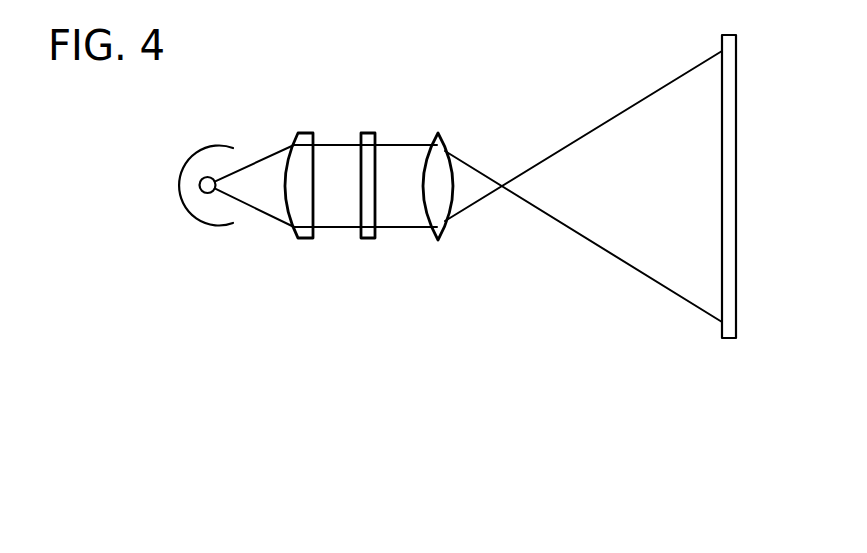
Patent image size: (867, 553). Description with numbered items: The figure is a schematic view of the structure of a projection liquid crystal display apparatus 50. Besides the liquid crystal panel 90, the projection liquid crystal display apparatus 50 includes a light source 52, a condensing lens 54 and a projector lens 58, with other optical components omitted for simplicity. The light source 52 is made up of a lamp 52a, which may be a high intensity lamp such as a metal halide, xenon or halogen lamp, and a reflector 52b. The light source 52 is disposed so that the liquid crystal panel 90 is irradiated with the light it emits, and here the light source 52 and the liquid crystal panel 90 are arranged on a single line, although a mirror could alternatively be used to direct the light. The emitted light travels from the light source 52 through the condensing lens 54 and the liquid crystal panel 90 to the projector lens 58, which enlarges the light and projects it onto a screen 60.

The projection liquid crystal display apparatus 50 is at (316, 72).
The light source 52 is at (263, 300).
The lamp 52a is at (210, 184).
The reflector 52b is at (223, 223).
The condensing lens 54 is at (305, 239).
The liquid crystal panel 90 is at (368, 239).
The projector lens 58 is at (437, 240).
The screen 60 is at (725, 340).